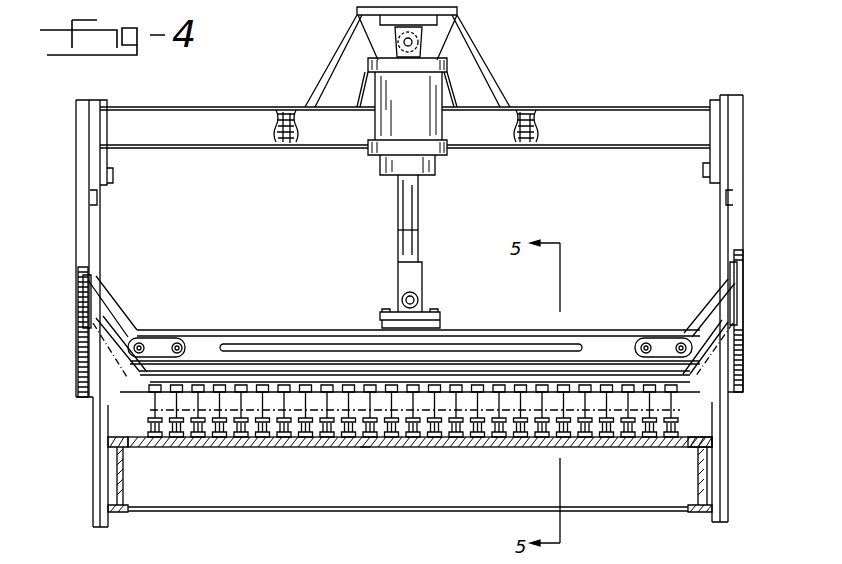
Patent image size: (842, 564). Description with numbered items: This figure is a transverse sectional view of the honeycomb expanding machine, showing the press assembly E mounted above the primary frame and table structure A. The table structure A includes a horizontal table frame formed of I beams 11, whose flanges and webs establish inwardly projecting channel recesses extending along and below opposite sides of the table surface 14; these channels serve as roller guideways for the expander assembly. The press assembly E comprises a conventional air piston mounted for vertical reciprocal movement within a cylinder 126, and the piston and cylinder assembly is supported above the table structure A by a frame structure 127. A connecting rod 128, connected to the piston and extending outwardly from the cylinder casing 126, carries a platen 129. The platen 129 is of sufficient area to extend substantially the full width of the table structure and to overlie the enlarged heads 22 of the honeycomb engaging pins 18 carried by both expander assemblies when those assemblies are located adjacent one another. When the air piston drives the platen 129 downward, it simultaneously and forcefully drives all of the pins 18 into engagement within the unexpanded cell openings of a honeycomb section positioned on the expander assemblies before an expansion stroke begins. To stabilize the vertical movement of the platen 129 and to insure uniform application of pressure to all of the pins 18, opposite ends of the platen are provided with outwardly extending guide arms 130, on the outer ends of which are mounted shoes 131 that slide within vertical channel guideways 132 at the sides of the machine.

The frame structure 127 is at (479, 51).
The cylinder 126 is at (422, 90).
The connecting rod 128 is at (398, 218).
The press assembly E is at (430, 227).
The vertical channel guideways 132 is at (78, 274).
The shoes 131 is at (88, 307).
The platen 129 is at (116, 328).
The guide arms 130 is at (708, 323).
The enlarged heads 22 is at (574, 387).
The pins 18 is at (157, 412).
The table surface 14 is at (697, 432).
The I beams 11 is at (128, 474).
The primary frame and table structure A is at (365, 441).